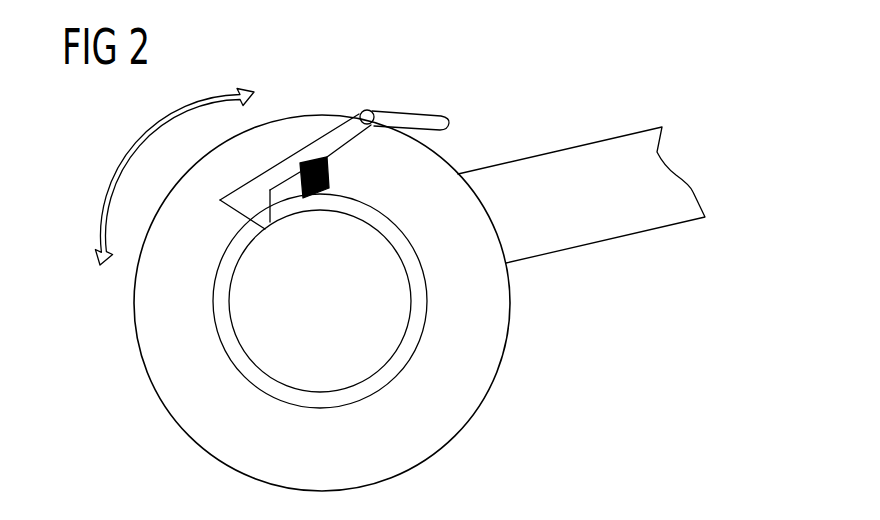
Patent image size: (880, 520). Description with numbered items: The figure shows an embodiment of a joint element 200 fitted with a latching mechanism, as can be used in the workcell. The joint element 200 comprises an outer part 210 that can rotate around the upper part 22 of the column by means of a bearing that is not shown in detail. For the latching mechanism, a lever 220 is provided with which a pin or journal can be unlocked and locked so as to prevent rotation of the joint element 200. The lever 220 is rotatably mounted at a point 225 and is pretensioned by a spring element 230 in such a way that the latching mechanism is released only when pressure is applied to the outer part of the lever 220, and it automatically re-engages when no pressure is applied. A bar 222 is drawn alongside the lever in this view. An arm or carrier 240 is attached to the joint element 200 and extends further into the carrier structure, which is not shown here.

The joint element 200 is at (382, 269).
The outer part 210 is at (146, 373).
The upper part of the column 22 is at (382, 305).
The lever 220 is at (412, 116).
The blade holder arm 222 is at (230, 214).
The point 225 is at (366, 110).
The spring element 230 is at (346, 176).
The arm or carrier 240 is at (532, 158).